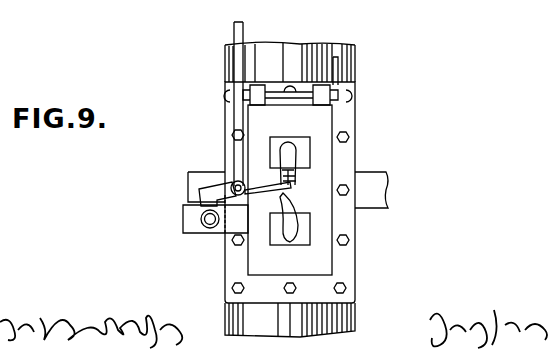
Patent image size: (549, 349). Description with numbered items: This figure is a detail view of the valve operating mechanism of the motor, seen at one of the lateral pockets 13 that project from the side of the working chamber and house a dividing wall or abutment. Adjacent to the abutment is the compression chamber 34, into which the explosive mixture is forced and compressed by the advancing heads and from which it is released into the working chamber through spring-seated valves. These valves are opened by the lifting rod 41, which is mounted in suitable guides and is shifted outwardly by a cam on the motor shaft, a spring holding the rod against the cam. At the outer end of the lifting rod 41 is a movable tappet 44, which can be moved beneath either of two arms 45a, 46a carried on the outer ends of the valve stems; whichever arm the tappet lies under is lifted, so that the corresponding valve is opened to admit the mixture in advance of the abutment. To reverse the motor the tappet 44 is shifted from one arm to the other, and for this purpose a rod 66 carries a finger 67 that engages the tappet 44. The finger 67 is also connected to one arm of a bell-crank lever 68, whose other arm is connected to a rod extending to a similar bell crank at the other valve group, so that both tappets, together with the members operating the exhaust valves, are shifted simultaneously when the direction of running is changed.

The pocket 13 is at (410, 190).
The compression chamber 34 is at (329, 184).
The lifting rod 41 is at (209, 229).
The movable tappet 44 is at (213, 186).
The arm 45a is at (292, 226).
The arm 46a is at (290, 162).
The rod 66 is at (242, 118).
The finger 67 is at (232, 184).
The bell-crank lever 68 is at (338, 63).